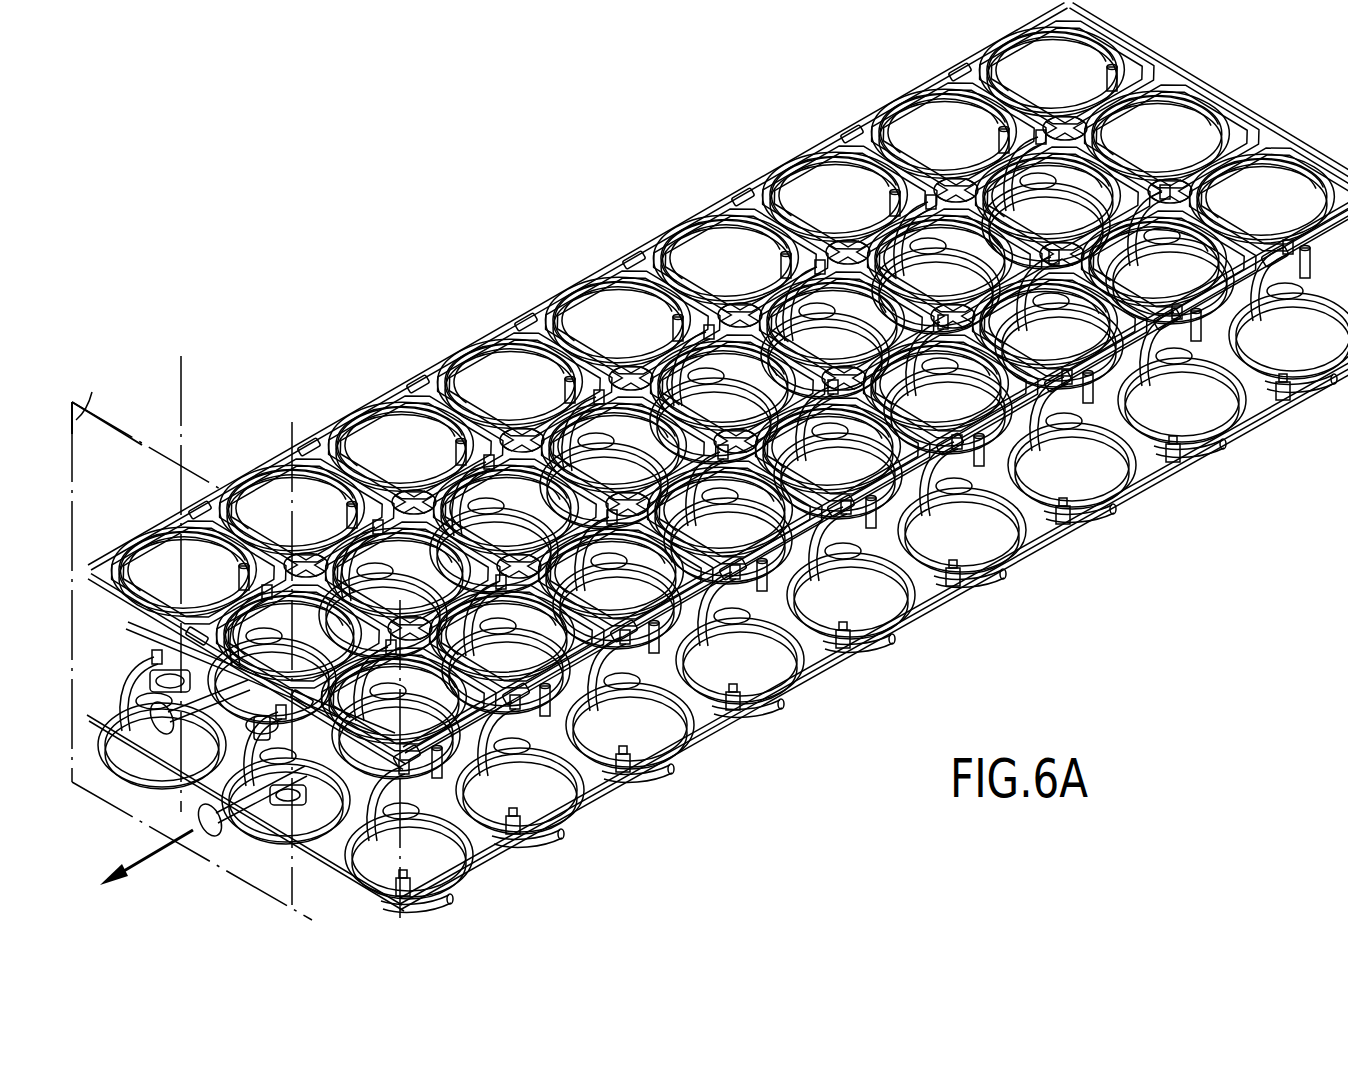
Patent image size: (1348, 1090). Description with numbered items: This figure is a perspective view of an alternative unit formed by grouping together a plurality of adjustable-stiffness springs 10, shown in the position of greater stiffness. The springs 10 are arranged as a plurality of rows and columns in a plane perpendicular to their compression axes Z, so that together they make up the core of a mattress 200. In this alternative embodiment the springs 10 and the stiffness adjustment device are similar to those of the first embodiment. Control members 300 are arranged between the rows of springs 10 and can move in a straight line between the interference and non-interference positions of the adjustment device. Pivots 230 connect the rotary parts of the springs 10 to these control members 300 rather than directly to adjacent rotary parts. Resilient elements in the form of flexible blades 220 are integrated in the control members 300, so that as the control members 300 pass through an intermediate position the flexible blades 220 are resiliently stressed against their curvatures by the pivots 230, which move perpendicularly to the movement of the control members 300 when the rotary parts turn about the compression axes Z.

The spring 10 is at (138, 530).
The core of a mattress 200 is at (710, 461).
The flexible blade 220 is at (150, 684).
The pivot 230 is at (253, 727).
The control member 300 is at (158, 728).